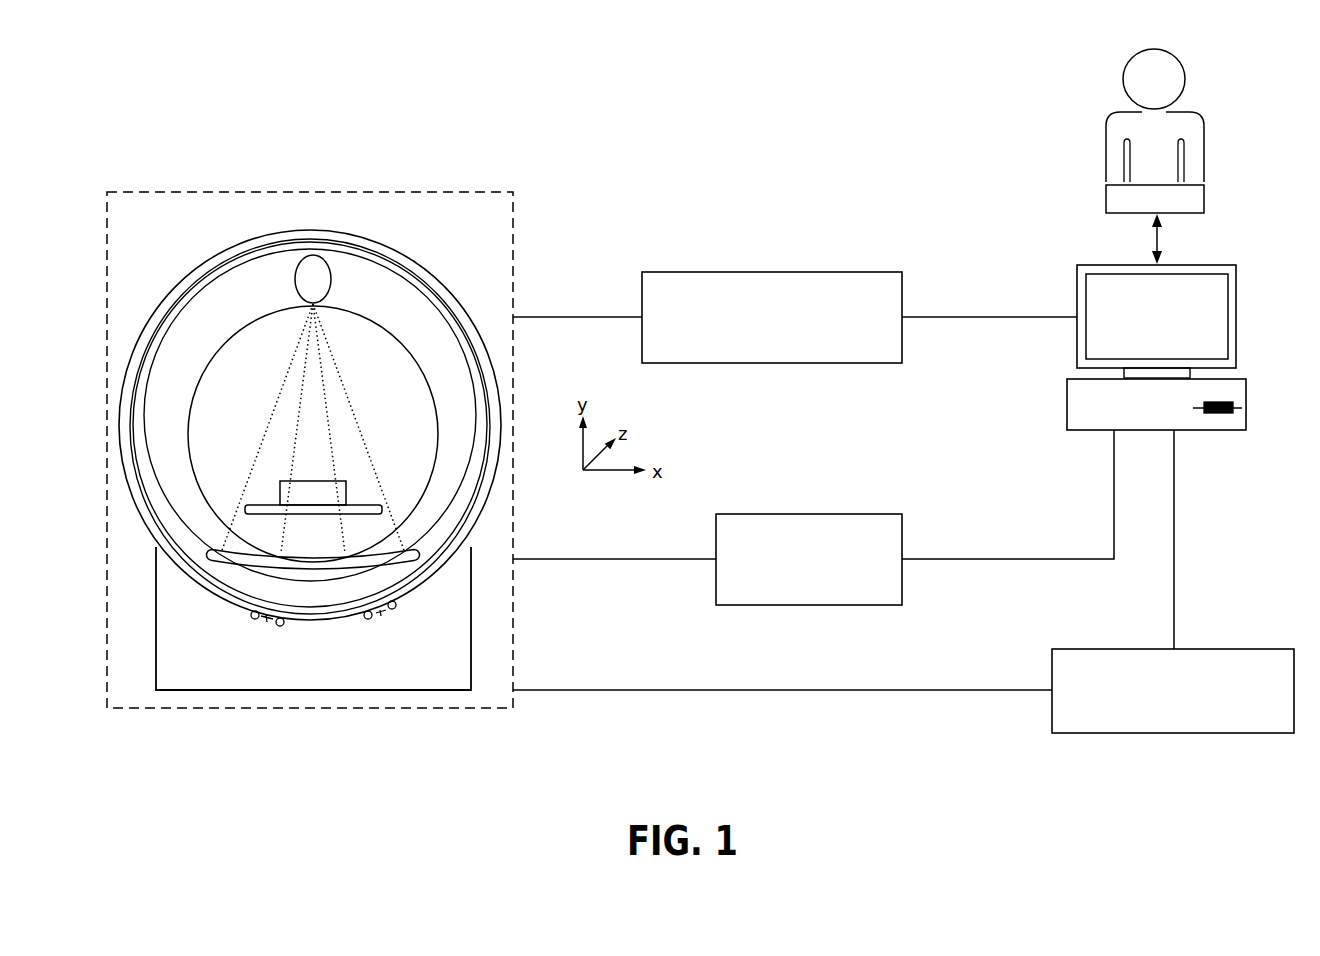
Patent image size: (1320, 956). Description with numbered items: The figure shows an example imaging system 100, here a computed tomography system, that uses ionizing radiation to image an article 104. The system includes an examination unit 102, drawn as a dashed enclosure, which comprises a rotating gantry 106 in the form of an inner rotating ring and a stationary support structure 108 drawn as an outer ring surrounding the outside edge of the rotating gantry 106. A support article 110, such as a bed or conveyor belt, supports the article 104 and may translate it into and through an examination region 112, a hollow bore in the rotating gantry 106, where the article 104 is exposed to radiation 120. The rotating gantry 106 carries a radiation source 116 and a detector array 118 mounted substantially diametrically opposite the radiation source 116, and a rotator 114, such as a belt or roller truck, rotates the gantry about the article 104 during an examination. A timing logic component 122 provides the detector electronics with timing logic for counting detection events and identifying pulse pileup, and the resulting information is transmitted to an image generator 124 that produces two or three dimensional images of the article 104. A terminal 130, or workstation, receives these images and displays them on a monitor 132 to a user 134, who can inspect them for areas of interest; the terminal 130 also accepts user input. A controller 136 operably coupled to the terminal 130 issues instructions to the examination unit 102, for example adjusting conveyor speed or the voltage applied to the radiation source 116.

The imaging system 100 is at (226, 42).
The examination unit 102 is at (512, 198).
The article 104 is at (347, 494).
The rotating gantry 106 is at (199, 276).
The support structure 108 is at (430, 262).
The support article 110 is at (253, 505).
The examination region 112 is at (307, 447).
The rotator 114 is at (393, 608).
The radiation source 116 is at (332, 282).
The detector array 118 is at (237, 572).
The radiation 120 is at (280, 392).
The timing logic component 122 is at (808, 514).
The image generator 124 is at (1088, 649).
The terminal 130 is at (1246, 379).
The monitor 132 is at (1236, 265).
The user 134 is at (1204, 125).
The controller 136 is at (772, 272).